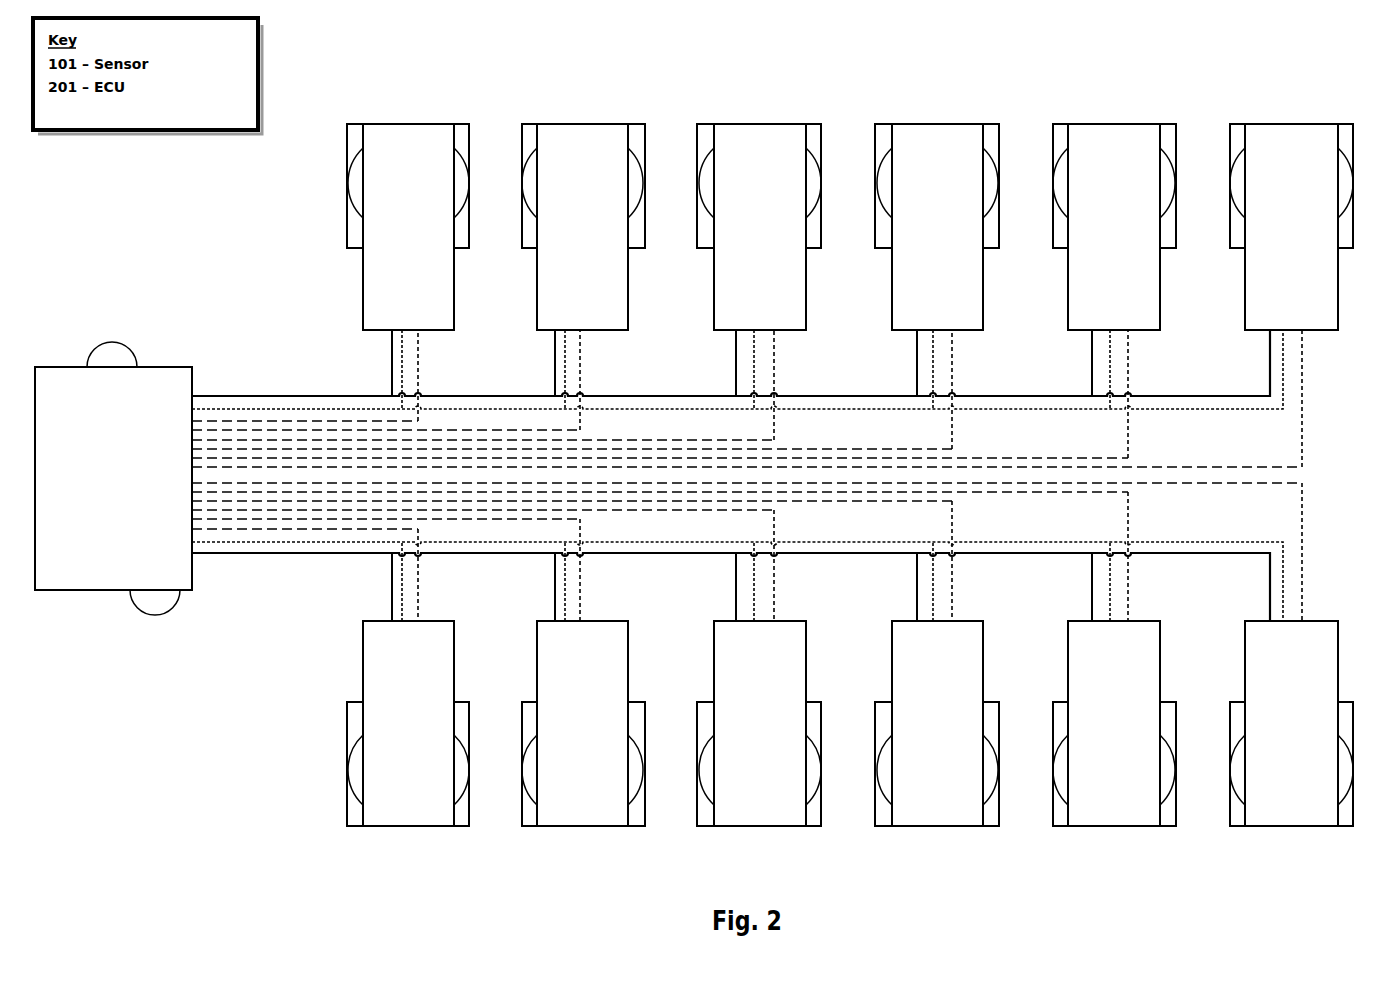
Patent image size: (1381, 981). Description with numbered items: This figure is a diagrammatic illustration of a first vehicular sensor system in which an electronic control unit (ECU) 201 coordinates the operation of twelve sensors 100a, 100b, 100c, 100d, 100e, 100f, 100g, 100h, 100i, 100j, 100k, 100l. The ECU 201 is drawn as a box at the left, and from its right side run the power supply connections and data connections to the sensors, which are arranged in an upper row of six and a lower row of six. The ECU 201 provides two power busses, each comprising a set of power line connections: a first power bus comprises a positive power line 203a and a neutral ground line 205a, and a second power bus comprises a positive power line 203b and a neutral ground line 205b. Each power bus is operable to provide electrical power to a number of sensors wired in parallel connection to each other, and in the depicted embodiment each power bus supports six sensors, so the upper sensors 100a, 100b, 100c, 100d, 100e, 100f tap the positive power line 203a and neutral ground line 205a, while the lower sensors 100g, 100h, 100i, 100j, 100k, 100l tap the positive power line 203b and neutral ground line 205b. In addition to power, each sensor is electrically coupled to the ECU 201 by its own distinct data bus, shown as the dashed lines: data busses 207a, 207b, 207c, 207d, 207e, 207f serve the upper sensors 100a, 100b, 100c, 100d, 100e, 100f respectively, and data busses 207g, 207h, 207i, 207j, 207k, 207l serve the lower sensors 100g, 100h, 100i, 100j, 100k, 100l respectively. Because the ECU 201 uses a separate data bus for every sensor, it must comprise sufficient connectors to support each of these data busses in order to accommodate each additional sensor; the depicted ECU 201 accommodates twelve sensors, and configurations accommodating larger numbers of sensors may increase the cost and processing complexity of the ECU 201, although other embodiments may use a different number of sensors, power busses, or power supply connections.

The electronic control unit (ECU) 201 is at (96, 488).
The positive power line 203a is at (257, 393).
The positive power line 203b is at (235, 554).
The neutral ground line 205a is at (323, 408).
The neutral ground line 205b is at (297, 543).
The sensor 100a is at (385, 194).
The sensor 100b is at (559, 194).
The sensor 100c is at (738, 194).
The sensor 100d is at (914, 194).
The sensor 100e is at (1091, 194).
The sensor 100f is at (1271, 194).
The sensor 100g is at (385, 781).
The sensor 100h is at (559, 781).
The sensor 100i is at (740, 781).
The sensor 100j is at (916, 781).
The sensor 100k is at (1091, 781).
The sensor 100l is at (1271, 781).
The data bus 207a is at (418, 356).
The data bus 207b is at (580, 358).
The data bus 207c is at (774, 358).
The data bus 207d is at (952, 368).
The data bus 207e is at (1128, 372).
The data bus 207f is at (1301, 433).
The data bus 207g is at (418, 586).
The data bus 207h is at (580, 586).
The data bus 207i is at (774, 578).
The data bus 207j is at (952, 592).
The data bus 207k is at (1128, 586).
The data bus 207l is at (1301, 508).